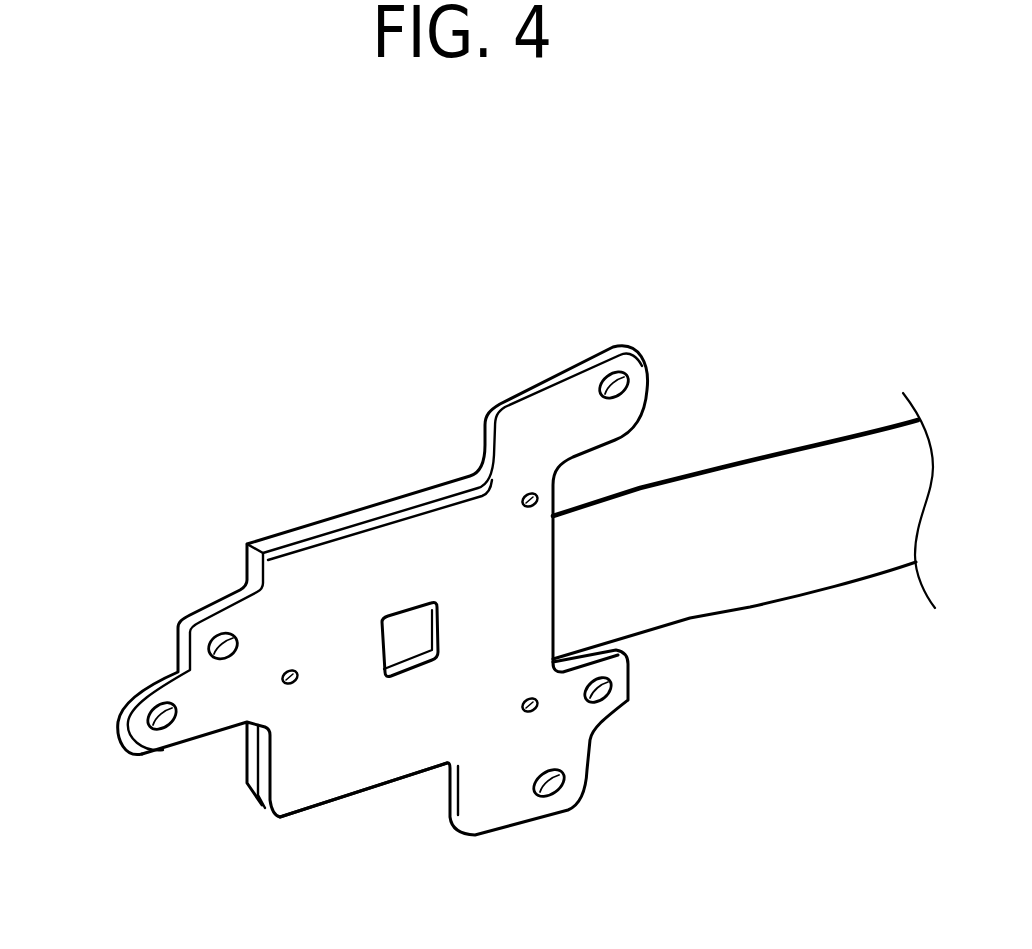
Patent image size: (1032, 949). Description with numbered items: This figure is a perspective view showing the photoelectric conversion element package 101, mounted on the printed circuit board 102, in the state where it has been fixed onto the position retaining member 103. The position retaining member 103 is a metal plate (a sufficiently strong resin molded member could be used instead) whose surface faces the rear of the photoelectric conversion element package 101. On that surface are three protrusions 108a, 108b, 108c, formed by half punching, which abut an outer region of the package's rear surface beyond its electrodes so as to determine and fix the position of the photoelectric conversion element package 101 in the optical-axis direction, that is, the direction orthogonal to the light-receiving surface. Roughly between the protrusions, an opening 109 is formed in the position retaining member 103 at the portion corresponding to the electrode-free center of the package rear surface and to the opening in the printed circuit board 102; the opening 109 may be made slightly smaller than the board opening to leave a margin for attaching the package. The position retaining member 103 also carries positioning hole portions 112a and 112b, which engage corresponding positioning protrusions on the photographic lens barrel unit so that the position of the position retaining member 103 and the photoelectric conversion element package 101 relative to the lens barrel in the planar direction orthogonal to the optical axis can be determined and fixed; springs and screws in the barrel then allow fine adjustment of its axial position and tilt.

The photoelectric conversion element package 101 is at (254, 785).
The printed circuit board 102 is at (723, 503).
The position retaining member 103 is at (362, 762).
The protrusion 108a is at (287, 668).
The protrusion 108b is at (530, 493).
The protrusion 108c is at (540, 708).
The opening 109 is at (388, 615).
The positioning hole portion 112a is at (610, 683).
The positioning hole portion 112b is at (207, 637).